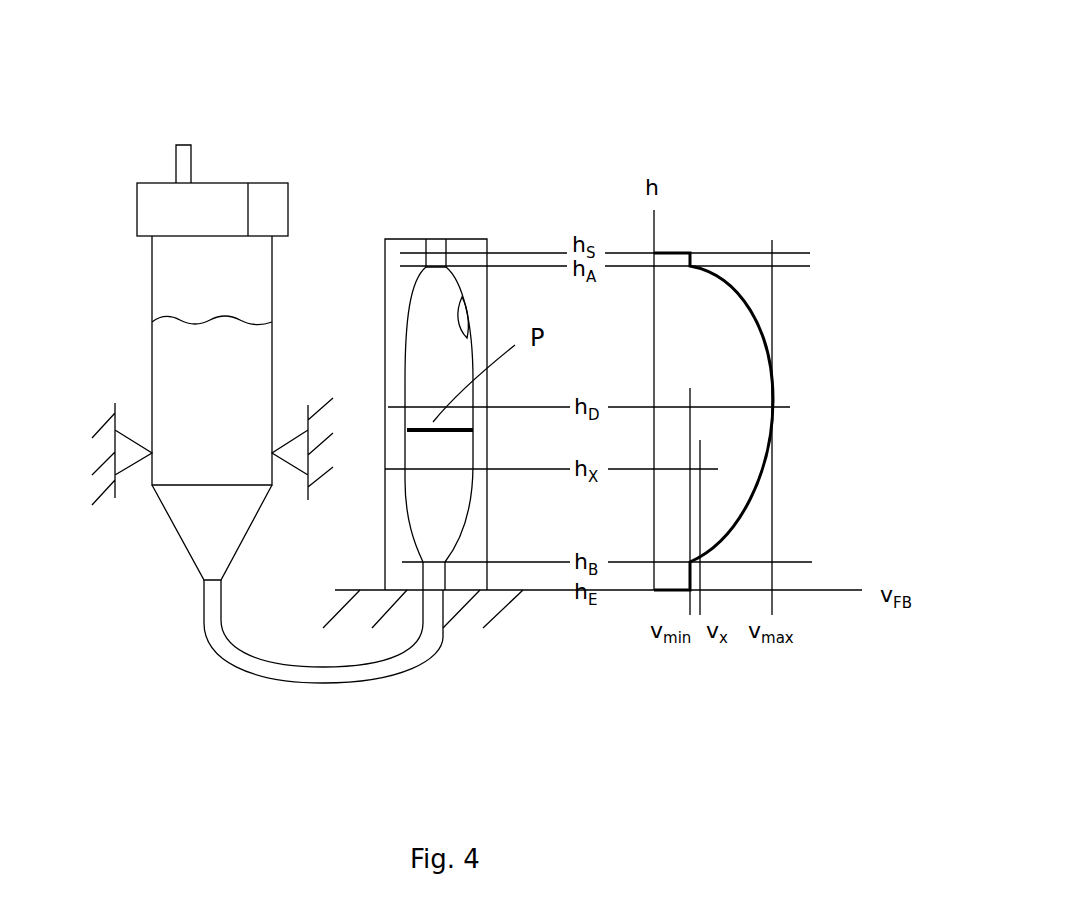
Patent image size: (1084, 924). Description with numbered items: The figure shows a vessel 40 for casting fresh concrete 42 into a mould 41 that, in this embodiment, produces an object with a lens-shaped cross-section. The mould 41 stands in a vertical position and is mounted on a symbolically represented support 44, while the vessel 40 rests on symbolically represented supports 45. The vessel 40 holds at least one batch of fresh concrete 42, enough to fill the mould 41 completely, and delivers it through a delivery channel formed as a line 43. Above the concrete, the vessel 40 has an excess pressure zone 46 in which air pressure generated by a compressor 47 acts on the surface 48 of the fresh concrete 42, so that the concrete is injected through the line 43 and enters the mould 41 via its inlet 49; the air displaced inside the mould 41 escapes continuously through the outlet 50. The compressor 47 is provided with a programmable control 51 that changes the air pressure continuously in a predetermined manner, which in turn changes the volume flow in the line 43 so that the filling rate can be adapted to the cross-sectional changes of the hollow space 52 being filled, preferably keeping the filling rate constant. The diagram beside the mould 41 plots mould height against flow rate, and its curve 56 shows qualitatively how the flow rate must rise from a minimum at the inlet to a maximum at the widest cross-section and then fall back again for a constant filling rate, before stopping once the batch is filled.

The vessel 40 is at (272, 293).
The mould 41 is at (457, 167).
The fresh concrete 42 is at (210, 352).
The line 43 is at (240, 668).
The support 44 is at (510, 590).
The supports 45 is at (293, 437).
The excess pressure zone 46 is at (203, 285).
The compressor 47 is at (177, 213).
The surface 48 is at (192, 315).
The inlet 49 is at (430, 575).
The outlet 50 is at (438, 242).
The programmable control 51 is at (267, 207).
The hollow space 52 is at (462, 297).
The curve 56 is at (753, 513).